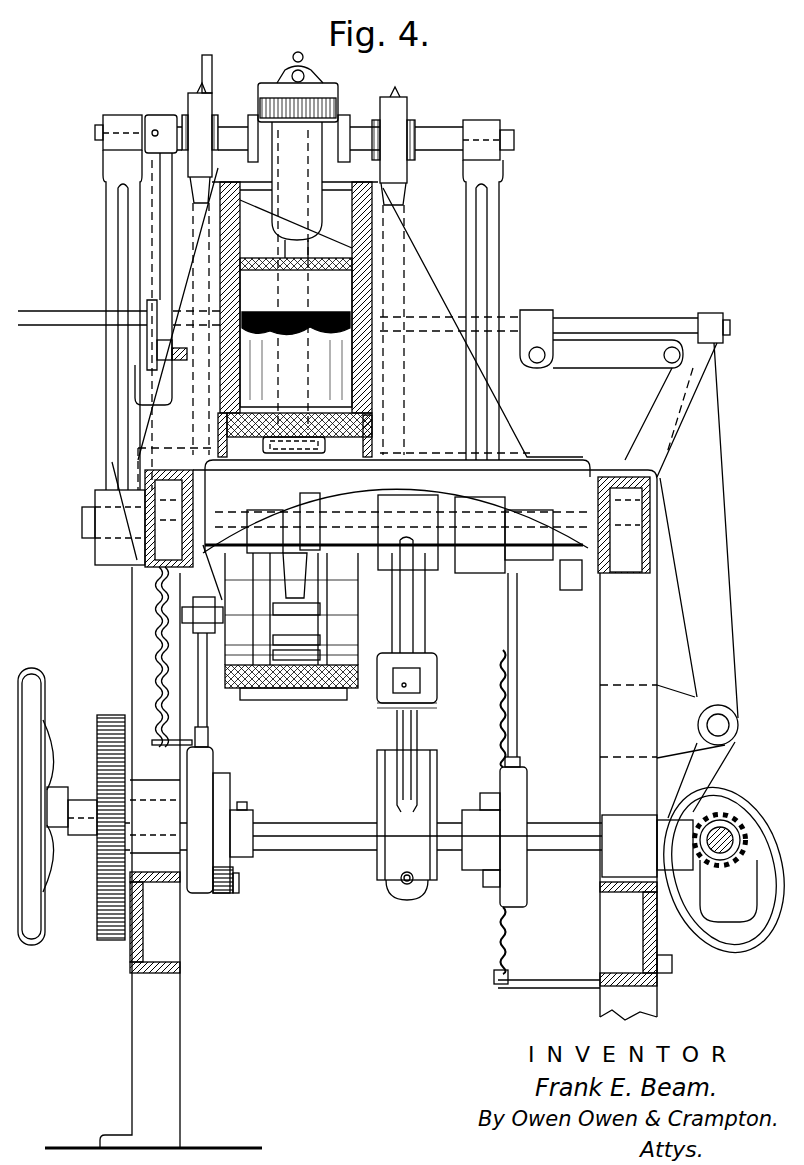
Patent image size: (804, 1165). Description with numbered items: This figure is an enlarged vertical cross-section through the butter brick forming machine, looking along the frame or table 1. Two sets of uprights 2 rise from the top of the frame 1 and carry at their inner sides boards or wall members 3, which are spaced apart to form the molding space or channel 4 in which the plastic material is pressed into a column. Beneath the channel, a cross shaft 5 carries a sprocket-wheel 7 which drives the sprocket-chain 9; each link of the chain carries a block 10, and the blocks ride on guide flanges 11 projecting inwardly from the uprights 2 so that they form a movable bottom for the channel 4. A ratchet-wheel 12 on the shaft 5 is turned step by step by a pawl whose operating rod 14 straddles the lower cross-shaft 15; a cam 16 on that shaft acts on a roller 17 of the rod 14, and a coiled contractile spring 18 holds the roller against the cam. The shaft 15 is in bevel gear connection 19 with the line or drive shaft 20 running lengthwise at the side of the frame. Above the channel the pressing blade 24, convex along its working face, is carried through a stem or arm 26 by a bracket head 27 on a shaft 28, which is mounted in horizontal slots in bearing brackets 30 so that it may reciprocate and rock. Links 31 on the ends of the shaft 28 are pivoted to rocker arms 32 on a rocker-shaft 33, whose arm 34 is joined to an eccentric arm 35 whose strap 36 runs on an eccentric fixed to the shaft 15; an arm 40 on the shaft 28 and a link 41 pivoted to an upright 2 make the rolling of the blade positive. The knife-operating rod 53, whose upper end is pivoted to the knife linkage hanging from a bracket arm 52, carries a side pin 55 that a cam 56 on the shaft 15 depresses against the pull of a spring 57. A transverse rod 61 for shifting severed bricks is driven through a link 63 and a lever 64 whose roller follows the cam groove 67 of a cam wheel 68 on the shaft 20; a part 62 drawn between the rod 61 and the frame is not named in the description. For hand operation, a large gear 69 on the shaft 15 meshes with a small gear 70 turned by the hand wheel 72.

The frame or table 1 is at (140, 612).
The uprights 2 is at (198, 239).
The board or wall member 3 is at (229, 248).
The molding space or channel 4 is at (340, 387).
The cross shaft 5 is at (90, 508).
The sprocket-wheel 7 is at (318, 508).
The sprocket-chain 9 is at (280, 455).
The block 10 is at (367, 418).
The guide flange 11 is at (352, 448).
The ratchet-wheel 12 is at (565, 575).
The operating rod 14 is at (520, 700).
The cross-shaft 15 is at (299, 827).
The cam 16 is at (486, 881).
The roller 17 is at (486, 793).
The coiled contractile spring 18 is at (499, 700).
The bevel gear connection 19 is at (690, 875).
The line or drive shaft 20 is at (722, 835).
The kneading or pressing blade 24 is at (362, 305).
The stem or arm 26 is at (300, 238).
The bracket head 27 is at (299, 241).
The shaft 28 is at (442, 136).
The bearing bracket 30 is at (192, 118).
The link 31 is at (120, 125).
The rocker arm 32 is at (118, 245).
The rocker-shaft 33 is at (85, 537).
The arm 34 is at (416, 642).
The eccentric arm 35 is at (410, 738).
The strap 36 is at (392, 832).
The arm 40 is at (165, 203).
The link 41 is at (150, 332).
The bracket arm 52 is at (207, 574).
The rod 53 is at (203, 708).
The side pin 55 is at (223, 895).
The cam 56 is at (224, 792).
The coiled contractile spring 57 is at (153, 655).
The rod 61 is at (596, 327).
The lever 62 is at (702, 368).
The link 63 is at (612, 362).
The lever 64 is at (704, 583).
The cam groove 67 is at (748, 938).
The cam wheel 68 is at (728, 891).
The large gear 69 is at (107, 735).
The small gear 70 is at (106, 825).
The hand wheel 72 is at (40, 703).